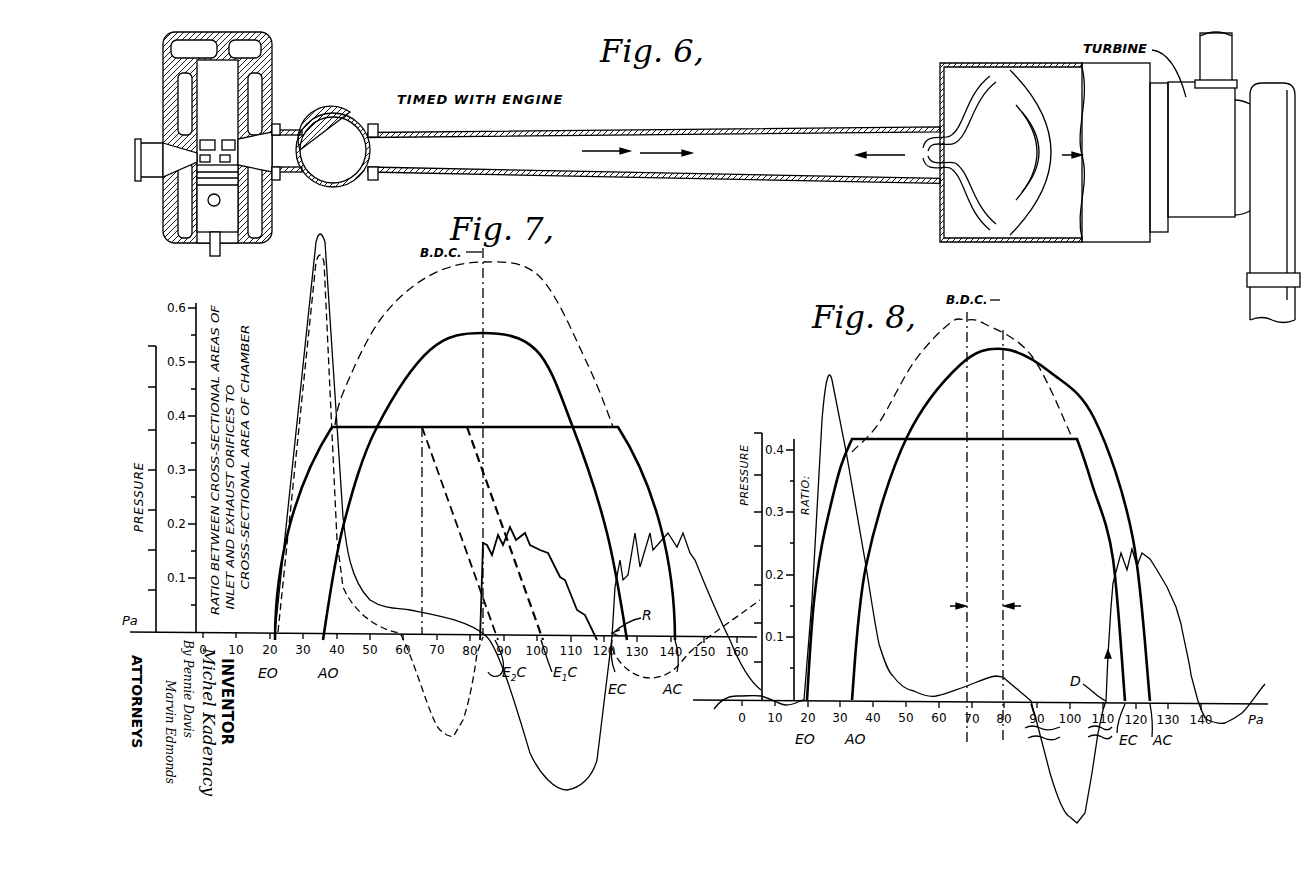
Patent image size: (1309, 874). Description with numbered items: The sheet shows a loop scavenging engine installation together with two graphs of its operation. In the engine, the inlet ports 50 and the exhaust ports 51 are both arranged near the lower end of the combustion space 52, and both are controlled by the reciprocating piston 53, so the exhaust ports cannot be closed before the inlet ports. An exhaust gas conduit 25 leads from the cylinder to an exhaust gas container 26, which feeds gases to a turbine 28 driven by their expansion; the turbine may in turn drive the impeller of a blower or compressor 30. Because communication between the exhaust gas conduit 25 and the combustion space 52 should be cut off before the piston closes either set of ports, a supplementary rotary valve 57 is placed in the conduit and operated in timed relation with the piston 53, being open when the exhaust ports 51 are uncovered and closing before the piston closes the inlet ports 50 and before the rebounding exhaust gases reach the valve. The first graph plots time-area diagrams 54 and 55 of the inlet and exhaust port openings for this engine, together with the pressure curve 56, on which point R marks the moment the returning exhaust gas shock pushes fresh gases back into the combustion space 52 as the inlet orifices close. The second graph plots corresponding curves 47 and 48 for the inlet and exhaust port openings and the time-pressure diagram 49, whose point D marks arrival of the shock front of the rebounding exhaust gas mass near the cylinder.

In FIG. 6, the exhaust gas conduit 25 is at (654, 131).
In FIG. 6, the exhaust gas container 26 is at (972, 73).
In FIG. 6, the turbine 28 is at (1228, 97).
In FIG. 6, the blower or compressor 30 is at (1263, 193).
In FIG. 6, the inlet ports 50 is at (160, 186).
In FIG. 6, the exhaust ports 51 is at (243, 143).
In FIG. 6, the combustion space 52 is at (231, 102).
In FIG. 6, the reciprocating piston 53 is at (186, 243).
In FIG. 6, the rotary valve 57 is at (327, 121).
In FIG. 7, the time-area diagram for inlet port openings 54 is at (552, 382).
In FIG. 7, the time-area diagram for exhaust port openings 55 is at (627, 447).
In FIG. 7, the pressure curve 56 is at (696, 553).
In FIG. 8, the time-area diagram of inlet port openings 47 is at (1094, 418).
In FIG. 8, the time-area diagram of exhaust port openings 48 is at (1093, 482).
In FIG. 8, the time-pressure diagram 49 is at (1167, 584).